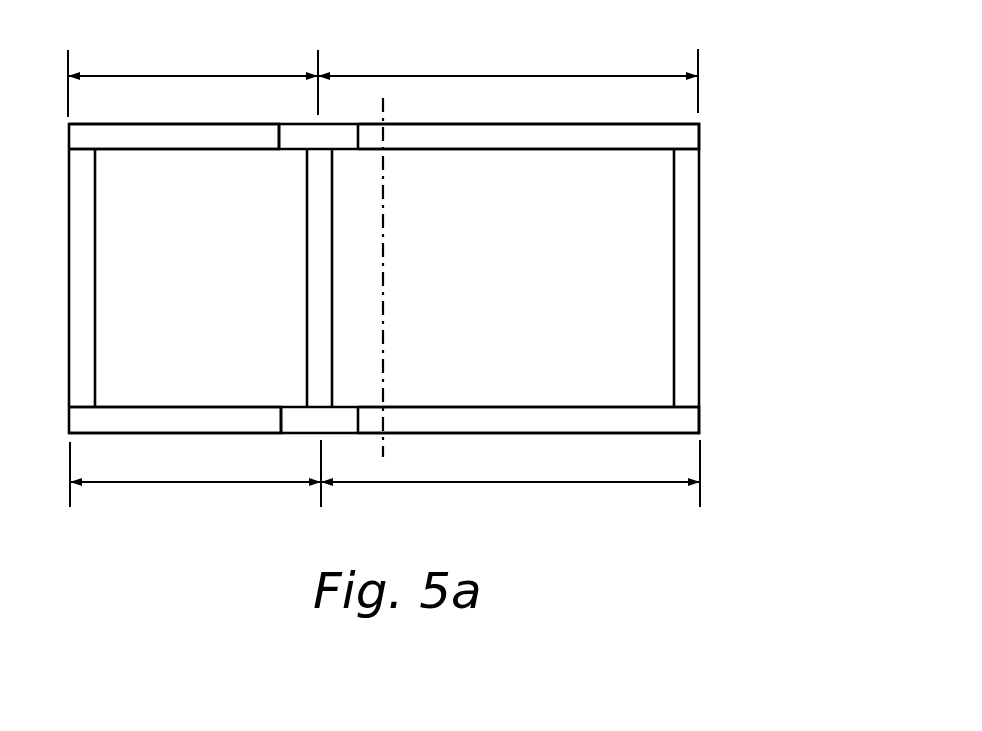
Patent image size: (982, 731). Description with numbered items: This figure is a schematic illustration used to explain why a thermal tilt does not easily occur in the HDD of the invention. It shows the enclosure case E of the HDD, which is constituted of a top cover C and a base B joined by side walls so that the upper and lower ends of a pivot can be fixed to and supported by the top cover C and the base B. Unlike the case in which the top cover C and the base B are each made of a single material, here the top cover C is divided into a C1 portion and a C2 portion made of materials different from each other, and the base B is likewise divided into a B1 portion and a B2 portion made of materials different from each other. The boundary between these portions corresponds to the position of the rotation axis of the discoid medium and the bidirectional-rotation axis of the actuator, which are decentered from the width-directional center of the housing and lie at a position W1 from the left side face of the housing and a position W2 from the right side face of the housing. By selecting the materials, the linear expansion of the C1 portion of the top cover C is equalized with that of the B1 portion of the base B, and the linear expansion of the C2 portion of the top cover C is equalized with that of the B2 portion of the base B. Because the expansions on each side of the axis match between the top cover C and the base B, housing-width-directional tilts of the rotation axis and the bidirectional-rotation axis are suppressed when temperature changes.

The enclosure case E is at (573, 110).
The top cover C is at (257, 124).
The C1 portion of the top cover C1 is at (196, 150).
The C2 portion of the top cover C2 is at (500, 150).
The base B is at (700, 278).
The B1 portion of the base B1 is at (177, 380).
The B2 portion of the base B2 is at (498, 406).
The position W1 from the left side face W1 is at (194, 273).
The position W2 from the right side face W2 is at (509, 274).